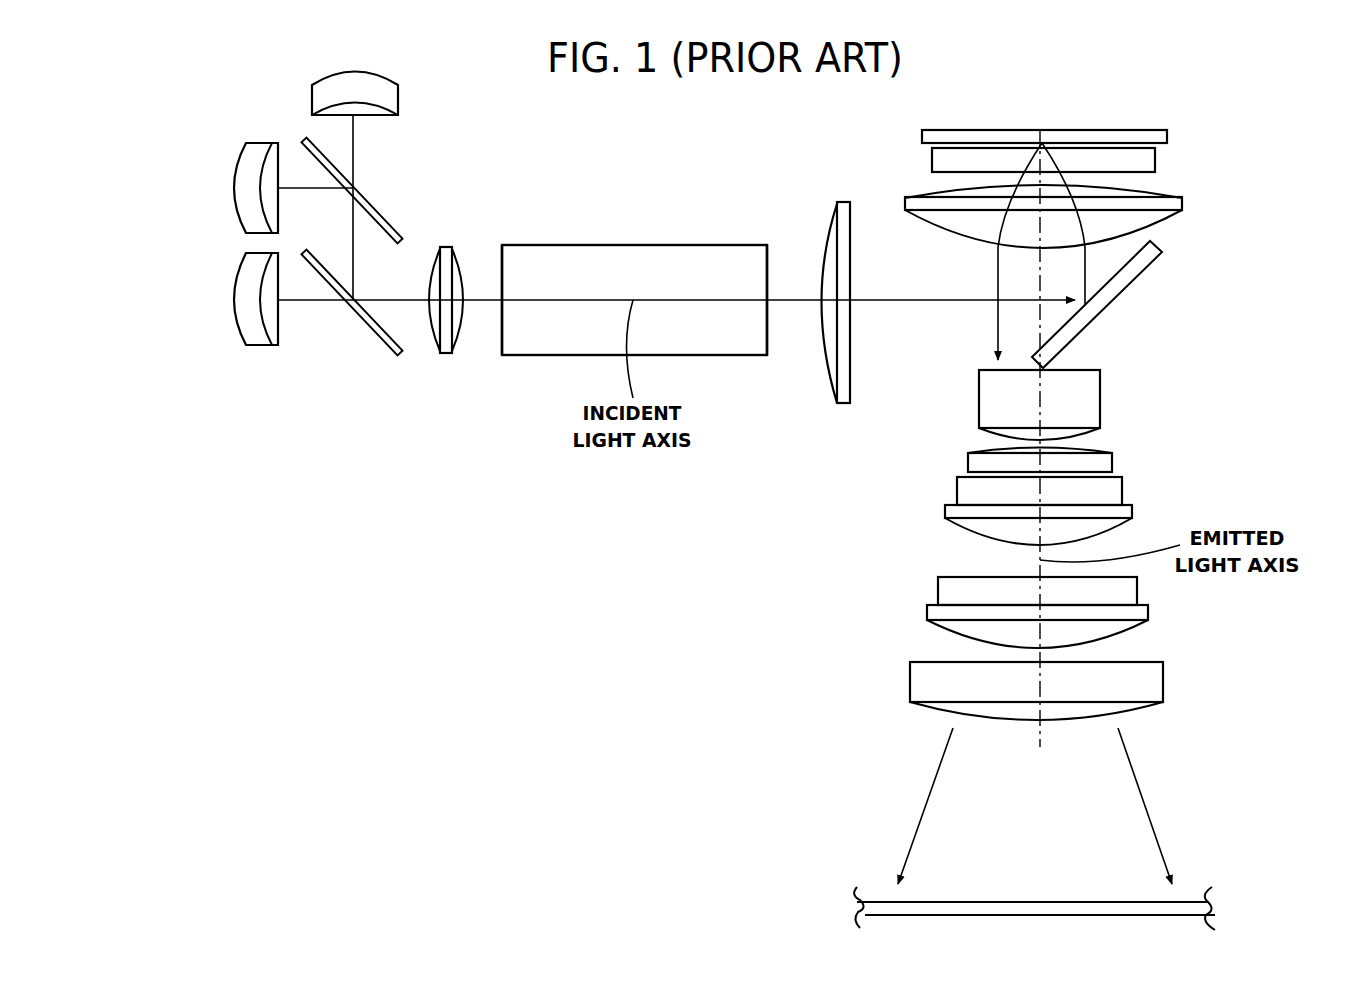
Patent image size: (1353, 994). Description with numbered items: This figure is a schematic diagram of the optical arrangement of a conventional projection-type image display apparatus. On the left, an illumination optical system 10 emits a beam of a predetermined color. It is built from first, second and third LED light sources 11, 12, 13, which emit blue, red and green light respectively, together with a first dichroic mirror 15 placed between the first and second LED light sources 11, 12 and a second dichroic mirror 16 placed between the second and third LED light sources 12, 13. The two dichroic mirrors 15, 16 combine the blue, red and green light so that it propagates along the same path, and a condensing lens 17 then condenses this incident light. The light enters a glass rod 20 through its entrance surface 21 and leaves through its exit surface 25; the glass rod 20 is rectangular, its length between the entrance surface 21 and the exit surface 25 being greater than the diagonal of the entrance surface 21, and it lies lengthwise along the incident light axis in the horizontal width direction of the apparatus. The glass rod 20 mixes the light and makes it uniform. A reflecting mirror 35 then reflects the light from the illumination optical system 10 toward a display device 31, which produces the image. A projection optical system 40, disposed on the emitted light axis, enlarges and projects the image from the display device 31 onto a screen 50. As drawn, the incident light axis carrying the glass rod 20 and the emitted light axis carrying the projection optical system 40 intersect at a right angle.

The illumination optical system 10 is at (313, 273).
The first LED light source 11 is at (312, 97).
The second LED light source 12 is at (228, 188).
The third LED light source 13 is at (228, 299).
The first dichroic mirror 15 is at (383, 213).
The second dichroic mirror 16 is at (377, 337).
The condensing lens 17 is at (445, 333).
The glass rod 20 is at (645, 317).
The entrance surface 21 is at (497, 338).
The exit surface 25 is at (768, 338).
The display device 31 is at (1167, 137).
The reflecting mirror 35 is at (1160, 247).
The projection optical system 40 is at (900, 370).
The screen 50 is at (1186, 900).